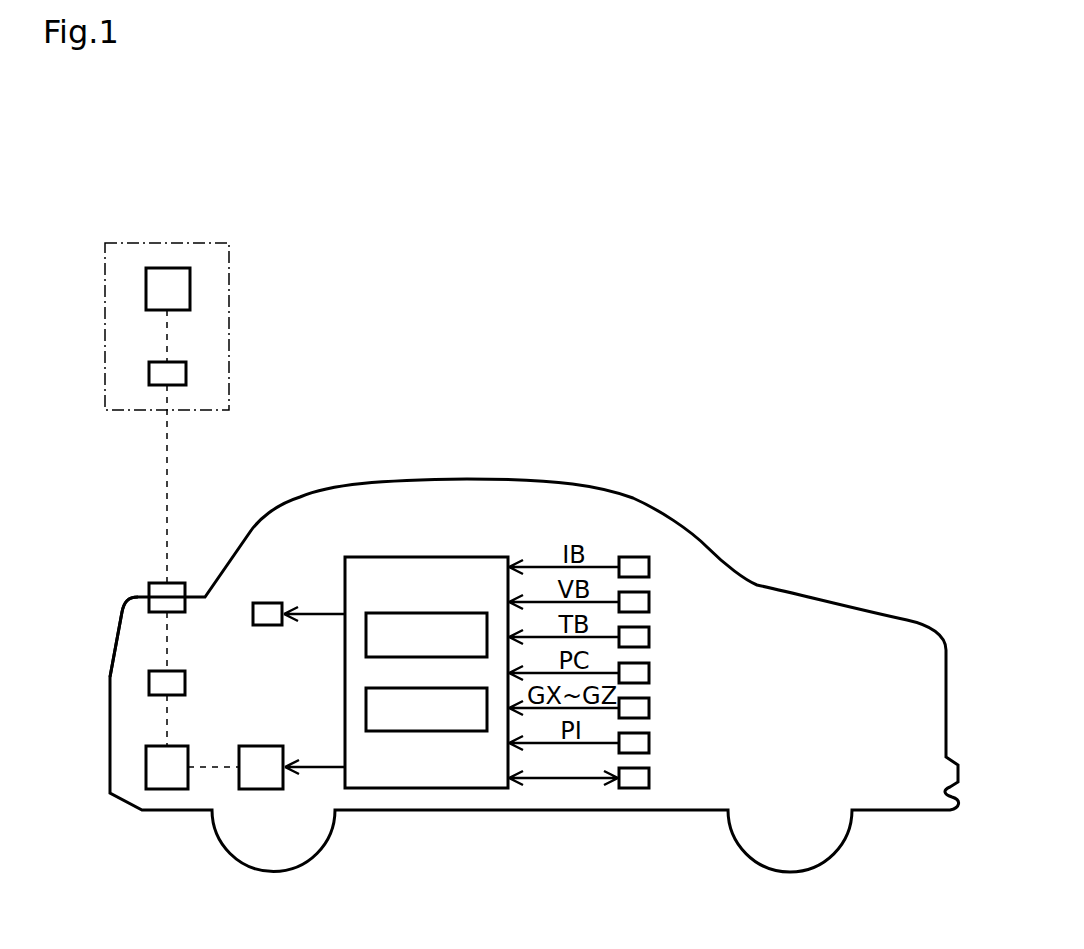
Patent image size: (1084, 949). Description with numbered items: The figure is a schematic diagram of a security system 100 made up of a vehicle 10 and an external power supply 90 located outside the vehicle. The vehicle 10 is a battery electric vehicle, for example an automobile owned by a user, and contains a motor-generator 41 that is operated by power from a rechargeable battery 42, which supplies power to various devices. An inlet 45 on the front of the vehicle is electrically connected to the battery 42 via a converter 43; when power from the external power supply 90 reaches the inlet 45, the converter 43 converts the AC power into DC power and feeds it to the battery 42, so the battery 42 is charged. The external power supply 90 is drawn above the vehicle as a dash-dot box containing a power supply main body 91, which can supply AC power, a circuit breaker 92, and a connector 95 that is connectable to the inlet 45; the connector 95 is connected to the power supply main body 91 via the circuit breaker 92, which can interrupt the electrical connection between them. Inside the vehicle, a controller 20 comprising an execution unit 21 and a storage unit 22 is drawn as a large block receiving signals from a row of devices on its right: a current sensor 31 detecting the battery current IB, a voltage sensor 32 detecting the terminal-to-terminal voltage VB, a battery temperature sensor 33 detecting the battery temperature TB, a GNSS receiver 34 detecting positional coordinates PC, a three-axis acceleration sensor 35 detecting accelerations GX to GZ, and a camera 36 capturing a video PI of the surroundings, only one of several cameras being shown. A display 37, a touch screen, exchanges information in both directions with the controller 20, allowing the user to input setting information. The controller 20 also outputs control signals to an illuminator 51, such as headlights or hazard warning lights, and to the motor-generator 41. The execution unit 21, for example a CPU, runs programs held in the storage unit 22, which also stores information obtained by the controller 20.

The security system 100 is at (774, 256).
The vehicle 10 is at (247, 531).
The controller 20 is at (417, 557).
The execution unit 21 is at (366, 633).
The storage unit 22 is at (366, 707).
The current sensor 31 is at (649, 567).
The voltage sensor 32 is at (649, 602).
The battery temperature sensor 33 is at (649, 637).
The GNSS receiver 34 is at (649, 673).
The acceleration sensor 35 is at (649, 708).
The camera 36 is at (649, 743).
The display 37 is at (649, 778).
The motor-generator 41 is at (262, 746).
The battery 42 is at (156, 746).
The converter 43 is at (155, 671).
The inlet 45 is at (159, 613).
The illuminator 51 is at (267, 603).
The external power supply 90 is at (206, 243).
The power supply main body 91 is at (190, 290).
The circuit breaker 92 is at (186, 375).
The connector 95 is at (160, 583).